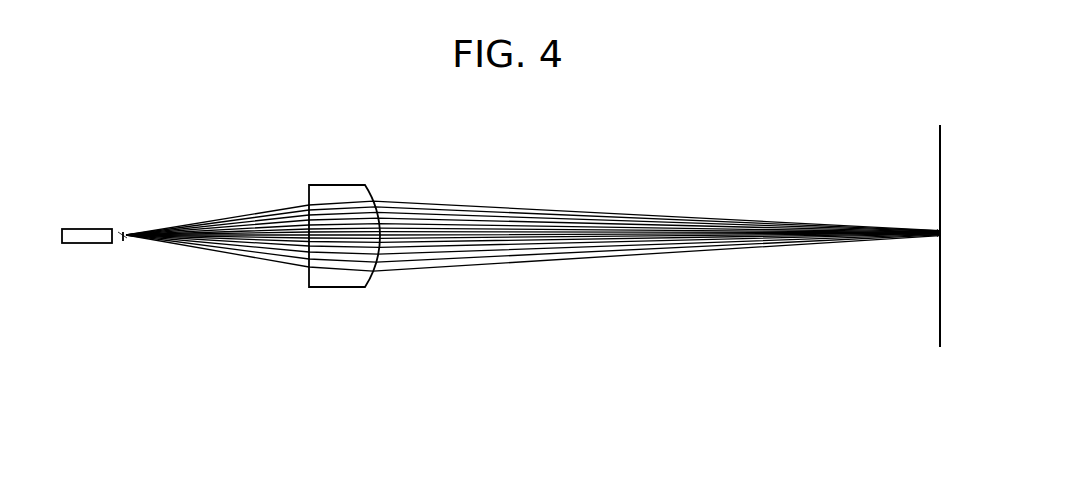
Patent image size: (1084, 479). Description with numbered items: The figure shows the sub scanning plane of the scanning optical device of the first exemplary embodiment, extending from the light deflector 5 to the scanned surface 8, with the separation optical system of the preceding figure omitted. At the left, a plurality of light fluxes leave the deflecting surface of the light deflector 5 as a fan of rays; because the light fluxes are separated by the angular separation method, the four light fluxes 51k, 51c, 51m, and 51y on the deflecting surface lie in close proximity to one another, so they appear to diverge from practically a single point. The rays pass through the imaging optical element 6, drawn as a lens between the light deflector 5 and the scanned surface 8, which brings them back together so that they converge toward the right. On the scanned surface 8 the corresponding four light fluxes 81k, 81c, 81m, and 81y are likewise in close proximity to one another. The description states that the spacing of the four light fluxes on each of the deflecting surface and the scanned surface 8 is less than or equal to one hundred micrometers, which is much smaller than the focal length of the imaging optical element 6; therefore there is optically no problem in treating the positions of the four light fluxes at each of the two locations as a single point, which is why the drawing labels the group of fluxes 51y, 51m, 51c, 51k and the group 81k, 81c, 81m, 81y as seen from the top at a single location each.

The light deflector 5 is at (97, 243).
The imaging optical element 6 is at (359, 276).
The scanned surface 8 is at (939, 337).
The light flux 51y is at (177, 166).
The light flux 51m is at (177, 166).
The light flux 51c is at (177, 166).
The light flux 51k is at (118, 229).
The light flux 81k is at (836, 184).
The light flux 81c is at (836, 184).
The light flux 81m is at (836, 184).
The light flux 81y is at (936, 228).